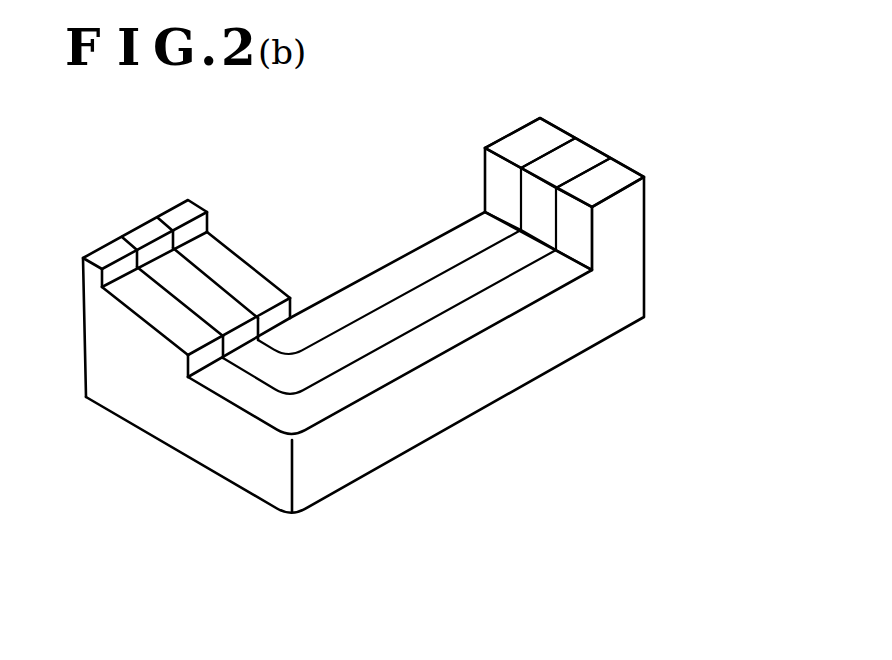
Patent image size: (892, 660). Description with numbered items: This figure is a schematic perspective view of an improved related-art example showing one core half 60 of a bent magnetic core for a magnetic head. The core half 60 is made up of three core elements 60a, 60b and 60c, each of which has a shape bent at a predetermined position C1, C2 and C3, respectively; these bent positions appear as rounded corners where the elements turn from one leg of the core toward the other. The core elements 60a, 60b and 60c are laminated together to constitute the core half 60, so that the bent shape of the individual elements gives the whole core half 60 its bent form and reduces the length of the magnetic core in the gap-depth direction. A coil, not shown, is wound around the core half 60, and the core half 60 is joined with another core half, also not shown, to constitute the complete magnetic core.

The core half 60 is at (413, 313).
The core element 60a is at (622, 172).
The core element 60b is at (580, 155).
The core element 60c is at (547, 137).
The bent position C1 is at (390, 421).
The bent position C2 is at (292, 378).
The bent position C3 is at (295, 338).